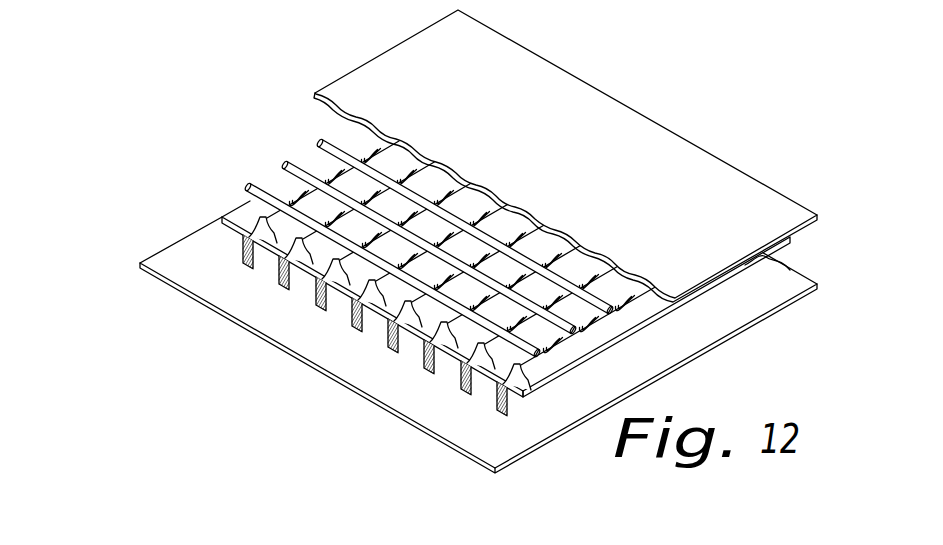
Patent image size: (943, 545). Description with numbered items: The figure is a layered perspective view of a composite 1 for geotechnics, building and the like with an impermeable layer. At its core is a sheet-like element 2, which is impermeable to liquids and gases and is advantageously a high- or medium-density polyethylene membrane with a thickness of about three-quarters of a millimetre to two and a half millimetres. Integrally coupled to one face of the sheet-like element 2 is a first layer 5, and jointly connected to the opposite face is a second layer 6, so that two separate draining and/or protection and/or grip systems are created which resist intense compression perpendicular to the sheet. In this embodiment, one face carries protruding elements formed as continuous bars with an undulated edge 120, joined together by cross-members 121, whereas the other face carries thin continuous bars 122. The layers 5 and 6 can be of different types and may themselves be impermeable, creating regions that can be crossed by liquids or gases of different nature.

The composite 1 is at (150, 102).
The sheet-like element 2 is at (240, 212).
The first integrally coupled layer 5 is at (380, 68).
The second layer 6 is at (180, 247).
The continuous bars with an undulated edge 120 is at (340, 182).
The cross-members 121 is at (285, 162).
The thin continuous bars 122 is at (207, 298).